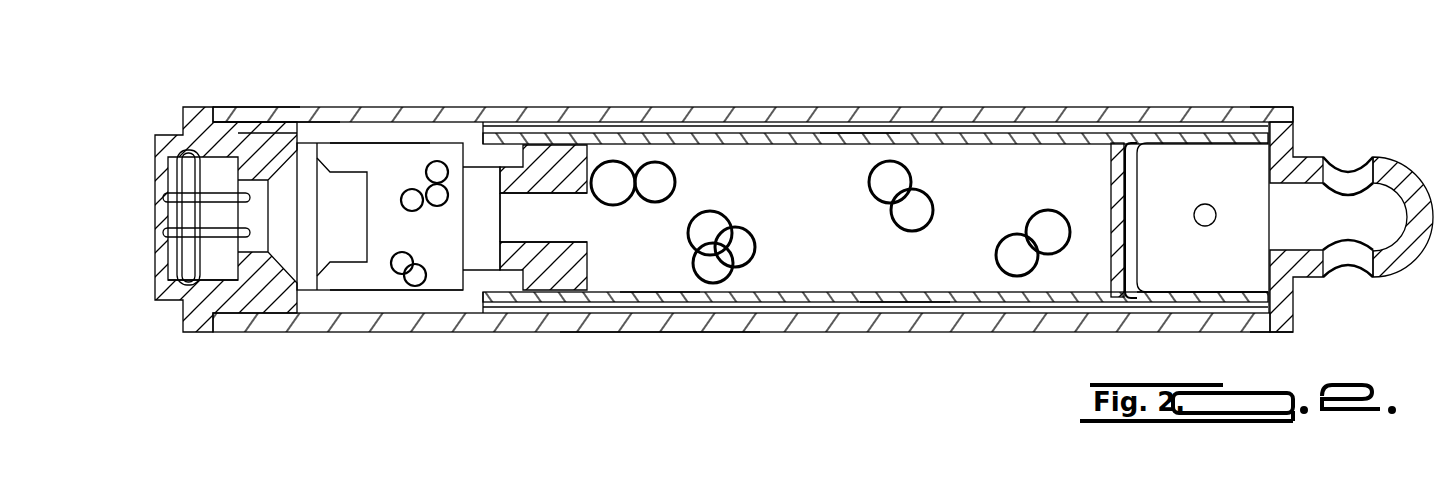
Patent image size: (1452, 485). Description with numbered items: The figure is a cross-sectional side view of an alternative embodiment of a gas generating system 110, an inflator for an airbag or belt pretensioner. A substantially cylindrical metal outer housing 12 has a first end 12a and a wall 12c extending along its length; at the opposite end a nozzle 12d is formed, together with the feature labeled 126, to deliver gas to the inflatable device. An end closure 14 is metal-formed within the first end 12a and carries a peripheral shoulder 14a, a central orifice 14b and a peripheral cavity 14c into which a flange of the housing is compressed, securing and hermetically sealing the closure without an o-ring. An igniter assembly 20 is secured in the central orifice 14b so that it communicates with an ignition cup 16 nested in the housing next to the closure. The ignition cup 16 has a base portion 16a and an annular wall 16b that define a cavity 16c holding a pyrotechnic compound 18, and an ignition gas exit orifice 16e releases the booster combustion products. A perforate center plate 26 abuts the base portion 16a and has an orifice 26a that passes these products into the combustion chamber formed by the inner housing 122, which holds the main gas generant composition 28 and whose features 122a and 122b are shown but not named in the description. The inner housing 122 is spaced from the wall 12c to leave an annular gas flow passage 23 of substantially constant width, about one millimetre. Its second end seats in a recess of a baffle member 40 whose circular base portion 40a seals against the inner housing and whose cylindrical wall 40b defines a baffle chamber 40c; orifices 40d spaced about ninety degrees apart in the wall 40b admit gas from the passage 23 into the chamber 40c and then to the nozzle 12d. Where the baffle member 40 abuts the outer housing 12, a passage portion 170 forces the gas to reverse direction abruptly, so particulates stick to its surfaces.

The outer housing 12 is at (492, 104).
The first end 12a is at (216, 106).
The wall 12c is at (657, 333).
The nozzle 12d is at (1404, 156).
The sleeve second end bottom 126 is at (1295, 331).
The portion of the gas flow passage 170 is at (1294, 109).
The end closure 14 is at (150, 126).
The peripheral shoulder 14a is at (310, 123).
The central orifice 14b is at (222, 260).
The peripheral cavity 14c is at (233, 128).
The ignition cup 16 is at (434, 122).
The base portion 16a is at (471, 296).
The annular wall 16b is at (413, 291).
The cavity 16c is at (386, 130).
The ignition gas exit orifice 16e is at (516, 233).
The pyrotechnic compound 18 is at (434, 214).
The igniter assembly 20 is at (210, 184).
The annular gas flow passage 23 is at (720, 125).
The center plate 26 is at (566, 160).
The orifice 26a is at (580, 216).
The main gas generant composition 28 is at (664, 178).
The baffle member 40 is at (1157, 310).
The base portion 40a is at (1116, 168).
The cylindrical wall 40b is at (1133, 158).
The baffle chamber 40c is at (1241, 170).
The orifices 40d is at (1205, 226).
The gas generating system 110 is at (804, 383).
The inner housing 122 is at (803, 138).
The inner tube bottom wall 122a is at (905, 262).
The inner tube top wall 122b is at (861, 133).